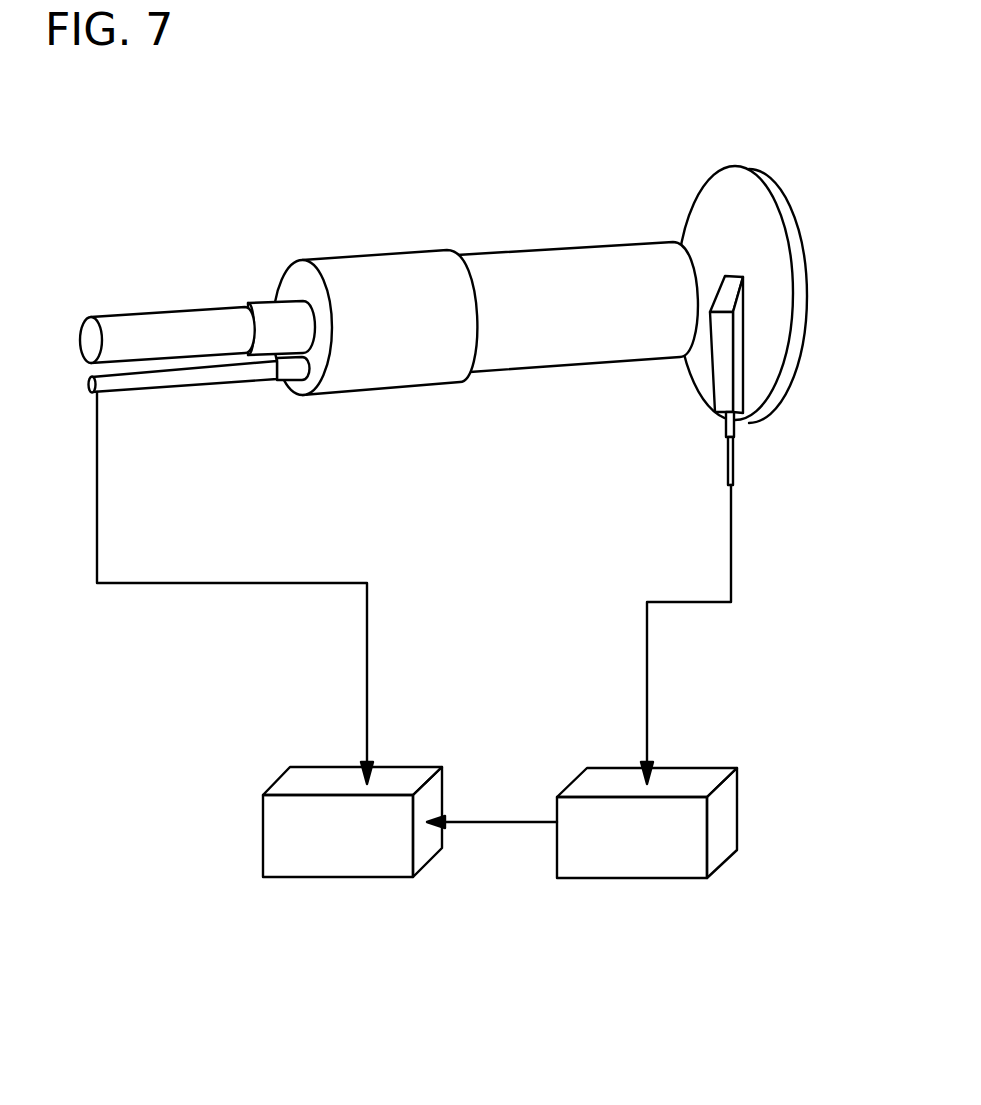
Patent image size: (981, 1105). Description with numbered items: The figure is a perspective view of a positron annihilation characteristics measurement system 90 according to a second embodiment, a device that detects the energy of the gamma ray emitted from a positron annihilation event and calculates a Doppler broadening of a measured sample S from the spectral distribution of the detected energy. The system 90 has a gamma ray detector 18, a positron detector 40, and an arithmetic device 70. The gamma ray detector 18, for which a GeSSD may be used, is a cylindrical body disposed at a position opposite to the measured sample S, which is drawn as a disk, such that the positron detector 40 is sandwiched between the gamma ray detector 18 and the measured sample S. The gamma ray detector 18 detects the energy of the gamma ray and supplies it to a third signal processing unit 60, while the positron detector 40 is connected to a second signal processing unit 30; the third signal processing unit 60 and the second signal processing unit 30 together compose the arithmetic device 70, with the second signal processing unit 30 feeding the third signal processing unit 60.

The positron annihilation characteristics measurement system 90 is at (290, 108).
The gamma ray detector 18 is at (537, 262).
The measured sample S is at (716, 207).
The positron detector 40 is at (722, 367).
The third signal processing unit 60 is at (422, 773).
The second signal processing unit 30 is at (602, 777).
The arithmetic device 70 is at (428, 697).